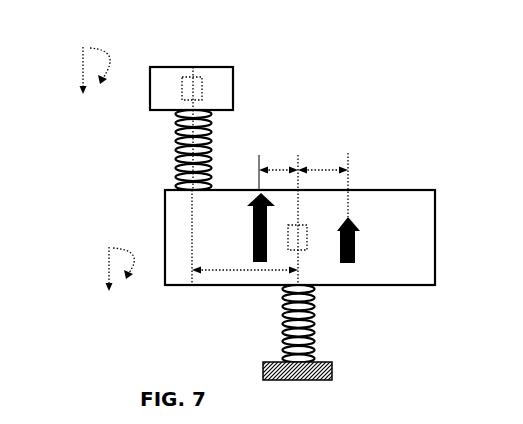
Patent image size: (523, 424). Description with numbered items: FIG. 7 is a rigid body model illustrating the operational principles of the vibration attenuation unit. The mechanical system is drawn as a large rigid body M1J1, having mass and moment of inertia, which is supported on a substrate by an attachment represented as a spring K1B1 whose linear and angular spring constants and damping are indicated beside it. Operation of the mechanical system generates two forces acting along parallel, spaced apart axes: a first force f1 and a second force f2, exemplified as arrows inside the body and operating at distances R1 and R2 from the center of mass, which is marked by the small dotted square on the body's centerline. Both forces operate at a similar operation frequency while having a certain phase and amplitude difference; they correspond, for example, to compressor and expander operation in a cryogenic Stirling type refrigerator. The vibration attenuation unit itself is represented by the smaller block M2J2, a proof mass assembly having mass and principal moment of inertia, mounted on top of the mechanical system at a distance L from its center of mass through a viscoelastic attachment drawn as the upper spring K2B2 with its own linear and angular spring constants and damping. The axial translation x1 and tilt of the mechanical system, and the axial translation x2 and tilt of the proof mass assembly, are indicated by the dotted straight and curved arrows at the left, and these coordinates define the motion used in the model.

The mechanical system rigid body M1J1 is at (395, 198).
The proof mass assembly M2J2 is at (218, 87).
The substrate attachment spring K1B1 is at (322, 333).
The viscoelastic attachment K2B2 is at (172, 143).
The first force f1 is at (249, 227).
The second force f2 is at (358, 240).
The distance of first force R1 is at (278, 153).
The distance of second force R2 is at (323, 153).
The proof mass mounting distance L is at (245, 261).
The axial translation of mechanical system x1 is at (108, 251).
The axial translation of proof mass assembly x2 is at (81, 55).